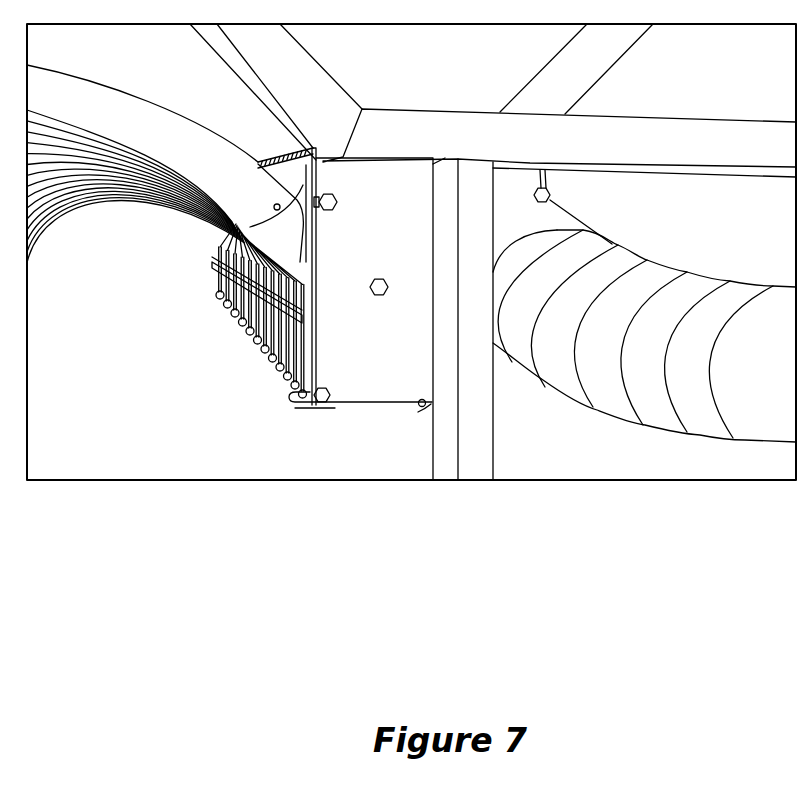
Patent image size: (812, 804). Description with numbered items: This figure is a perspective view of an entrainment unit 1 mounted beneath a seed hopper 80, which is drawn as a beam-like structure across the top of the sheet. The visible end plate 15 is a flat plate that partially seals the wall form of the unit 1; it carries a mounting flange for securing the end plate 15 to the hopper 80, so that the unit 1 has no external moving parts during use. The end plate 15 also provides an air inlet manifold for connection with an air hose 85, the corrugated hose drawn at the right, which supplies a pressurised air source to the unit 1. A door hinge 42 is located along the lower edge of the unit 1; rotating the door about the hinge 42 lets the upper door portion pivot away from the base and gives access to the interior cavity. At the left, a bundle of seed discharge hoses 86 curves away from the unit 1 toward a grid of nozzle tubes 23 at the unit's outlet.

The entrainment unit 1 is at (218, 374).
The end plate 15 is at (371, 233).
The nozzle tubes 23 is at (230, 248).
The door hinge 42 is at (417, 412).
The seed hopper 80 is at (424, 77).
The air hose 85 is at (623, 400).
The seed discharge hoses 86 is at (162, 123).